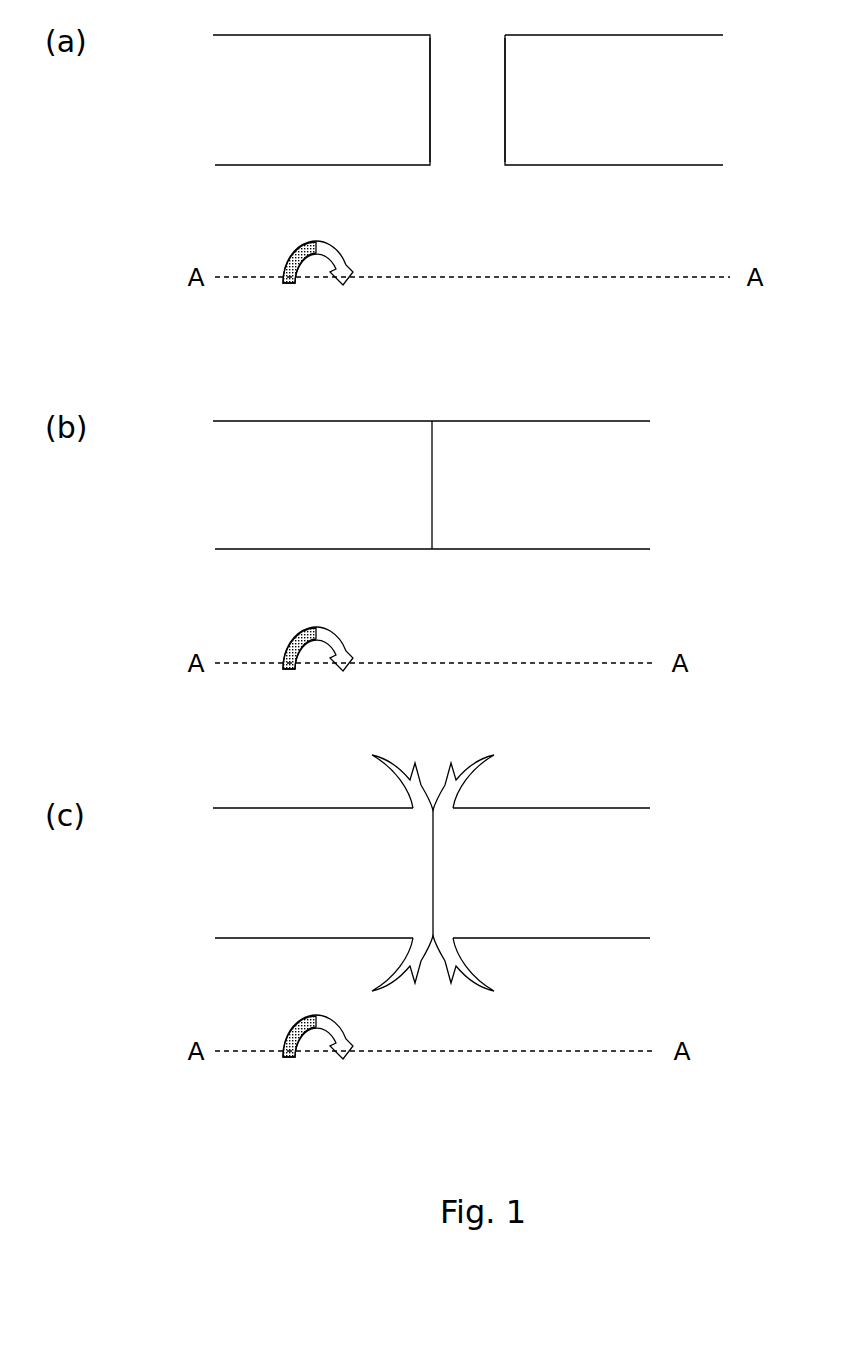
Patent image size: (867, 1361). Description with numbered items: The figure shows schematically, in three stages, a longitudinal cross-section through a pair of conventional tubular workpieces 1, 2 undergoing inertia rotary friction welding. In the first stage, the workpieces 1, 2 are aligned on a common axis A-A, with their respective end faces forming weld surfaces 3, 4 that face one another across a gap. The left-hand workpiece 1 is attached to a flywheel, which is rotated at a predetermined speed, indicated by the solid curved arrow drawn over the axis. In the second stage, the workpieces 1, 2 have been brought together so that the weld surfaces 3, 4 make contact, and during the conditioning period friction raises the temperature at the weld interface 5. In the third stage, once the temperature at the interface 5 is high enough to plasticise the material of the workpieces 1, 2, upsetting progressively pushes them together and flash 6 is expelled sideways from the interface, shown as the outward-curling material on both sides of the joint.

The tubular workpiece 1 is at (322, 486).
The tubular workpiece 2 is at (577, 486).
The weld surface 3 is at (431, 113).
The weld surface 4 is at (504, 57).
The weld interface 5 is at (432, 477).
The flash 6 is at (466, 772).